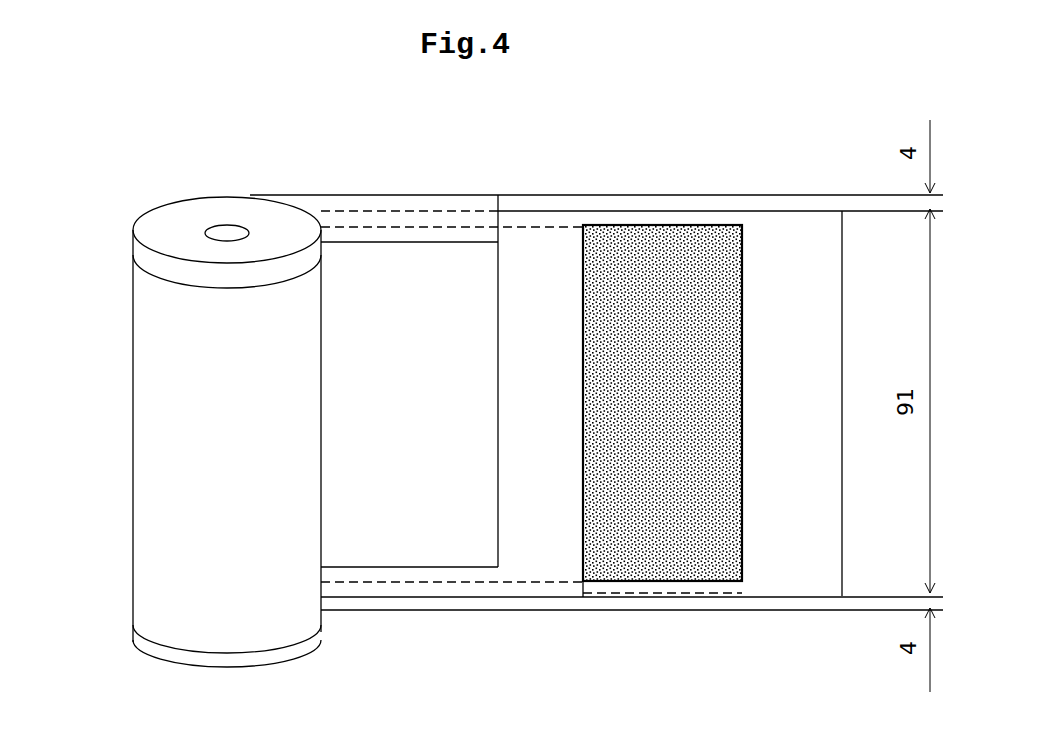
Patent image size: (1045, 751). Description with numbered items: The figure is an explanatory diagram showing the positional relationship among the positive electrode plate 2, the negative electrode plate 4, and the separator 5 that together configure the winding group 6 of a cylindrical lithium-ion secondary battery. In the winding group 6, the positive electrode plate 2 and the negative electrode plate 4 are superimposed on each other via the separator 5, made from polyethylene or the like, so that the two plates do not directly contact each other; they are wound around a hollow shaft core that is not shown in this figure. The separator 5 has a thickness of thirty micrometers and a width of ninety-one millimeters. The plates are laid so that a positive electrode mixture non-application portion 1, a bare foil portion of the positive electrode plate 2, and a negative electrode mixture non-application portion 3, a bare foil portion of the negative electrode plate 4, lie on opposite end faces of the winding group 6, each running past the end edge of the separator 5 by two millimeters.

The positive electrode mixture non-application portion 1 is at (133, 247).
The positive electrode plate 2 is at (370, 540).
The negative electrode mixture non-application portion 3 is at (133, 635).
The negative electrode plate 4 is at (698, 253).
The separator 5 is at (785, 580).
The winding group 6 is at (177, 412).